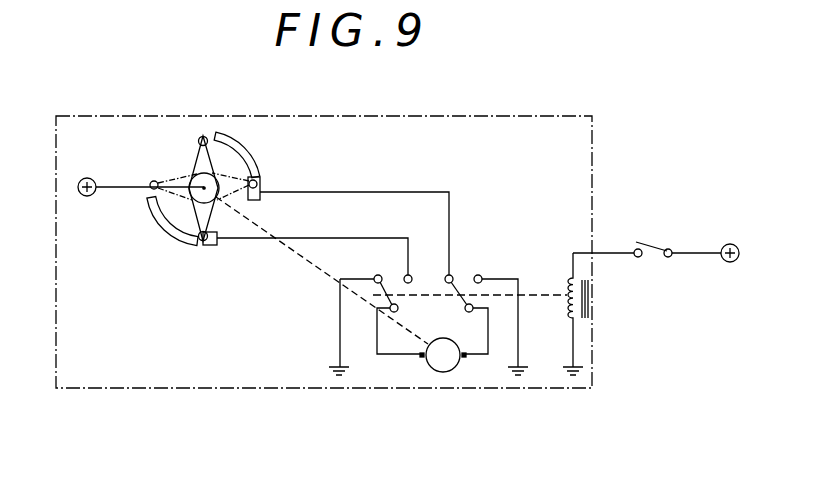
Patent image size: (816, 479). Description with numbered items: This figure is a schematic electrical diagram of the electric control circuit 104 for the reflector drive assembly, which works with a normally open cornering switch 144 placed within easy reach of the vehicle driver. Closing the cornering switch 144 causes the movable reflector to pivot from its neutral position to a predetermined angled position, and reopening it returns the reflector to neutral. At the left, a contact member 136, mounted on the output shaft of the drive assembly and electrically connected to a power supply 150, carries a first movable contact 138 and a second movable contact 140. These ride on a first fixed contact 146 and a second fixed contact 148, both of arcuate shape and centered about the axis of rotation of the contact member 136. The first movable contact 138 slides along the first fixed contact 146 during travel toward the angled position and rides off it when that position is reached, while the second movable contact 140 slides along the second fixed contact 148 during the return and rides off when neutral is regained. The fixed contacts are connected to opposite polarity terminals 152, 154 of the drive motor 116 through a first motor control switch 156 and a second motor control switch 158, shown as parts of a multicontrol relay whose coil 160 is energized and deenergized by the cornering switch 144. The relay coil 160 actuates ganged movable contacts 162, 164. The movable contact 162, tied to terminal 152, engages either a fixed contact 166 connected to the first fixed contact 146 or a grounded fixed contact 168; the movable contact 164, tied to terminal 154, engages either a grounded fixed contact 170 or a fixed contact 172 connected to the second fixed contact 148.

The electric control circuit 104 is at (568, 108).
The drive motor 116 is at (445, 373).
The contact member 136 is at (197, 158).
The first movable contact 138 is at (150, 183).
The second movable contact 140 is at (201, 136).
The cornering switch 144 is at (651, 258).
The first fixed contact 146 is at (162, 232).
The second fixed contact 148 is at (244, 133).
The power supply 150 is at (88, 197).
The terminal 152 is at (421, 357).
The terminal 154 is at (466, 359).
The first motor control switch 156 is at (384, 300).
The second motor control switch 158 is at (463, 274).
The relay coil 160 is at (589, 301).
The movable contact 162 is at (392, 313).
The movable contact 164 is at (489, 322).
The fixed contact 166 is at (410, 275).
The fixed contact 168 is at (376, 275).
The grounded fixed contact 170 is at (481, 276).
The fixed contact 172 is at (446, 285).